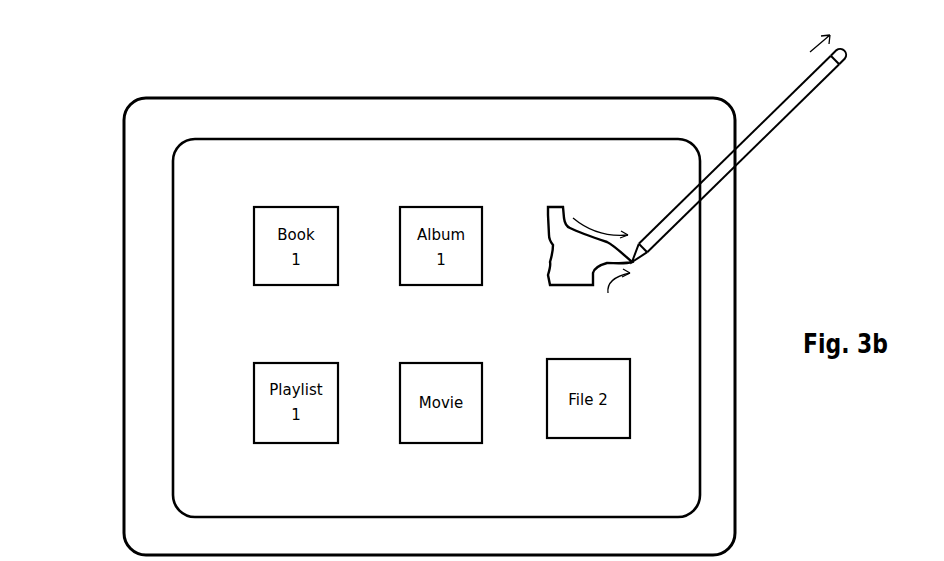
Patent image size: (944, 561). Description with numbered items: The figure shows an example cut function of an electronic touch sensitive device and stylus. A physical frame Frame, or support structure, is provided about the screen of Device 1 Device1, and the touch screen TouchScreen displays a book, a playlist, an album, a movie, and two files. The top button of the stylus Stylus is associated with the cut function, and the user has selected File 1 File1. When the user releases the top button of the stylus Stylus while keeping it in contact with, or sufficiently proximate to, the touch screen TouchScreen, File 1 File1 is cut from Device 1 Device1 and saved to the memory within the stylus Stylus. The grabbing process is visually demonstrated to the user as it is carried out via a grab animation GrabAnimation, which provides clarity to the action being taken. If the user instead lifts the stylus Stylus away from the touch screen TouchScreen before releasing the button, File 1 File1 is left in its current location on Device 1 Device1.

The frame Frame is at (120, 432).
The Device 1 Device1 is at (484, 126).
The touch screen TouchScreen is at (207, 197).
The File 1 File1 is at (590, 246).
The grab animation GrabAnimation is at (602, 222).
The stylus Stylus is at (780, 135).